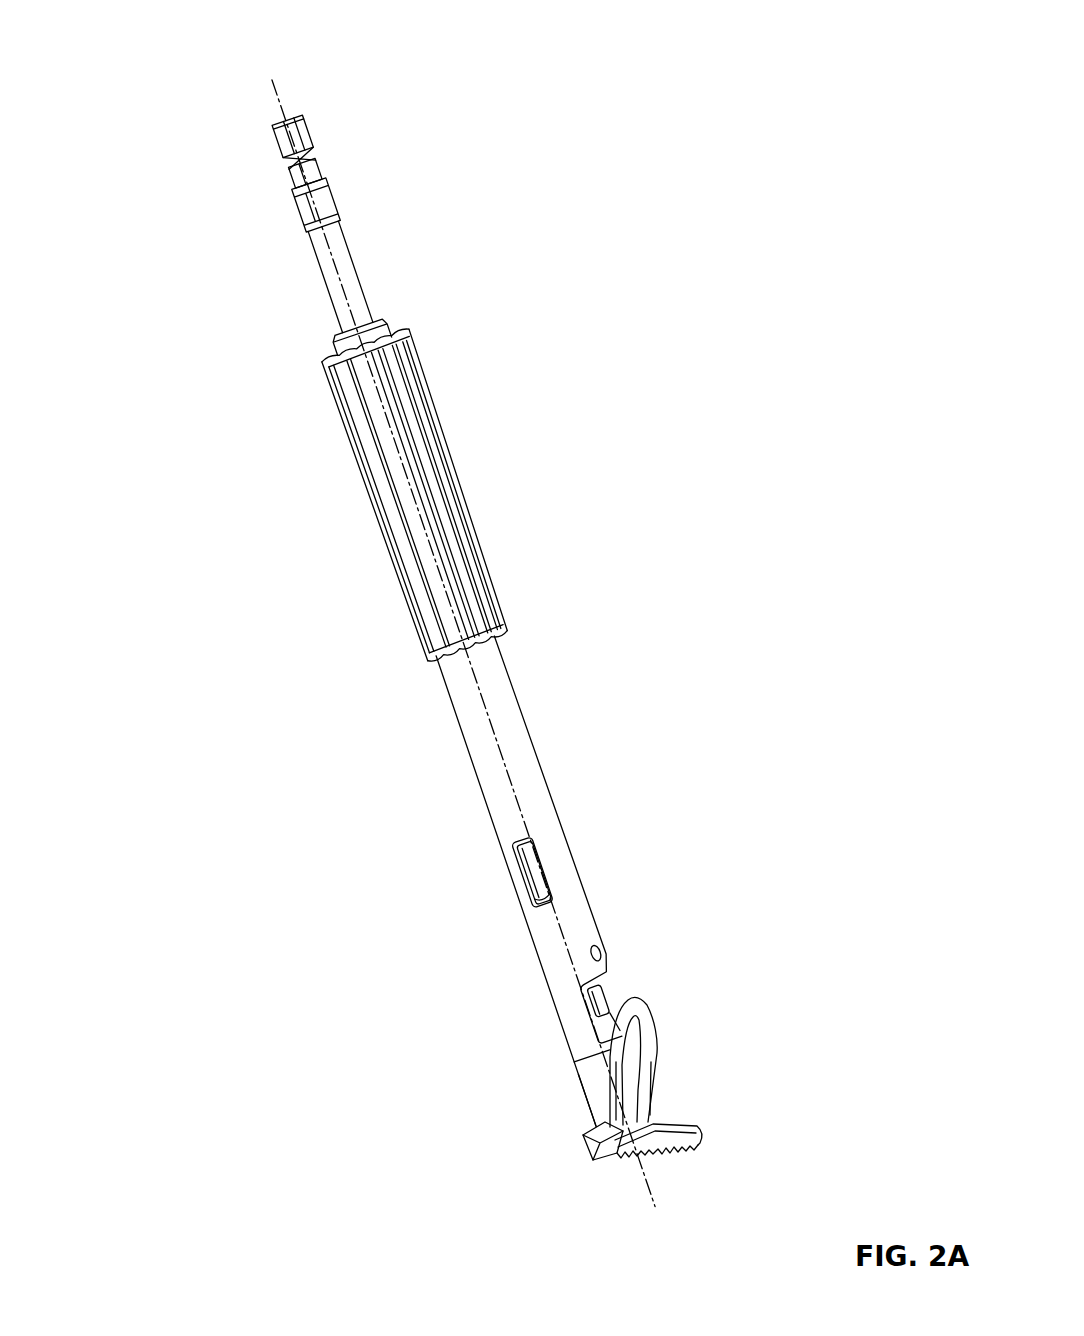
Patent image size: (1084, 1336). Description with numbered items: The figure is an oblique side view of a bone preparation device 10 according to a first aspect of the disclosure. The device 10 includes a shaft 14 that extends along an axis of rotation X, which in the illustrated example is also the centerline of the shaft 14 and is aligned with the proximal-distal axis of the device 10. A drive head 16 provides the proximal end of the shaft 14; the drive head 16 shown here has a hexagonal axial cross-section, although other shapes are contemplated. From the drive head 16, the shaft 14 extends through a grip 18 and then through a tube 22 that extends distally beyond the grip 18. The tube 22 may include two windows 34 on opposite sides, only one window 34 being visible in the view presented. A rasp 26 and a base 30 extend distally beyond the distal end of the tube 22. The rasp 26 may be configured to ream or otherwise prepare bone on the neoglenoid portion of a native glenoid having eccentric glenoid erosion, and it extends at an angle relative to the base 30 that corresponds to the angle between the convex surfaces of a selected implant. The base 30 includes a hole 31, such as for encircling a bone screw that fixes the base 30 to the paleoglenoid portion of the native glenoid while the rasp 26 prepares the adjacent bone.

The bone preparation device 10 is at (124, 30).
The shaft 14 is at (363, 273).
The drive head 16 is at (312, 128).
The grip 18 is at (464, 480).
The tube 22 is at (538, 748).
The rasp 26 is at (688, 1122).
The base 30 is at (582, 1090).
The hole 31 is at (607, 1158).
The window 34 is at (517, 875).